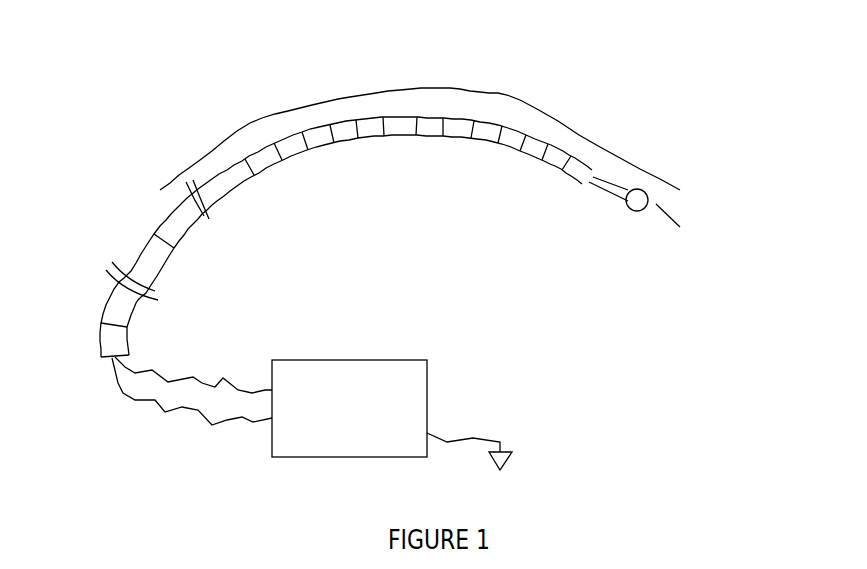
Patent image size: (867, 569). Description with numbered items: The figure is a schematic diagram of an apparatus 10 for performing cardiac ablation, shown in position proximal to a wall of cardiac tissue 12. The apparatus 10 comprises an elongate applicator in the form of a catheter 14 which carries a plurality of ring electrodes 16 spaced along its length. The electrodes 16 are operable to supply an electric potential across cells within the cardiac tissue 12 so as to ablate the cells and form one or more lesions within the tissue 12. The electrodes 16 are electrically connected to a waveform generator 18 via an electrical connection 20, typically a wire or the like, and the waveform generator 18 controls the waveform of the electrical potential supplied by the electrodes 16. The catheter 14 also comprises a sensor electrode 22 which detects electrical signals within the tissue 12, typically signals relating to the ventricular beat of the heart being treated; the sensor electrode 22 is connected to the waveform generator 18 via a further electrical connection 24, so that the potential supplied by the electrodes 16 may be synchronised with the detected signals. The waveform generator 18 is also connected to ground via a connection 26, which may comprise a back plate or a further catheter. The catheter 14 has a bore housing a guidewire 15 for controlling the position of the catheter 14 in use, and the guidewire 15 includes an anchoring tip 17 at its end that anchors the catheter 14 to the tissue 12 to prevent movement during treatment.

The apparatus 10 is at (518, 280).
The cardiac tissue 12 is at (512, 102).
The catheter 14 is at (587, 163).
The guidewire 15 is at (604, 192).
The ring electrodes 16 is at (363, 137).
The anchoring tip 17 is at (674, 190).
The waveform generator 18 is at (349, 408).
The electrical connection 20 is at (166, 412).
The sensor electrode 22 is at (157, 232).
The electrical connection 24 is at (193, 377).
The connection 26 is at (505, 440).